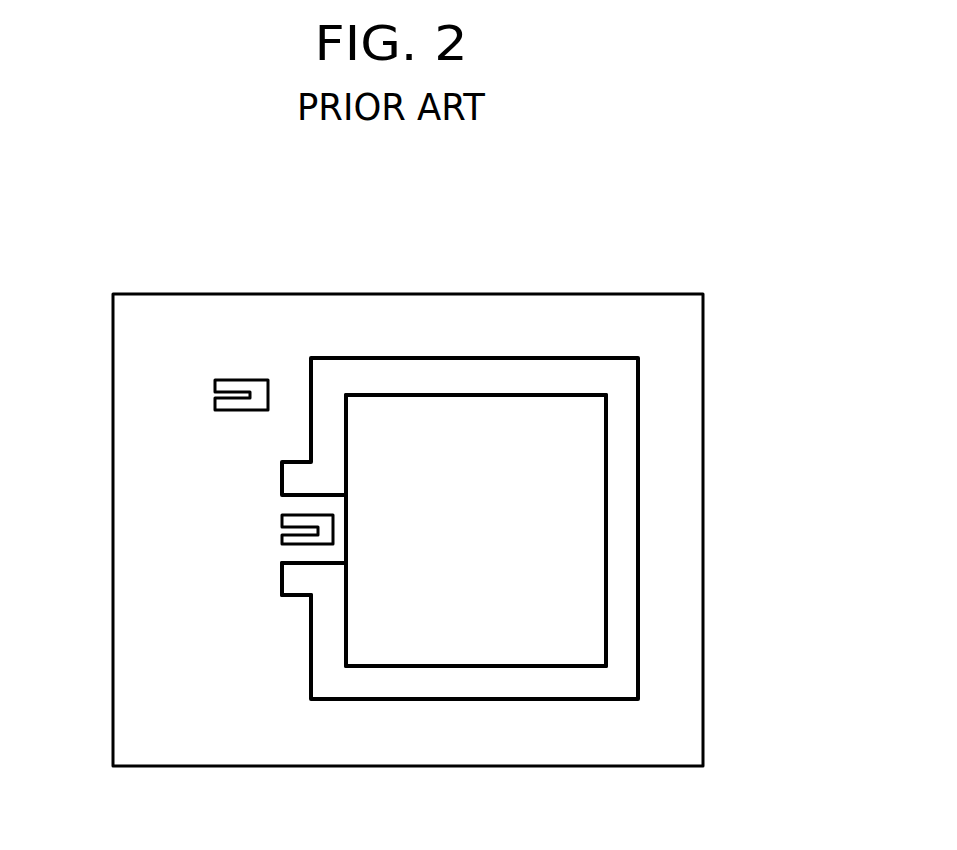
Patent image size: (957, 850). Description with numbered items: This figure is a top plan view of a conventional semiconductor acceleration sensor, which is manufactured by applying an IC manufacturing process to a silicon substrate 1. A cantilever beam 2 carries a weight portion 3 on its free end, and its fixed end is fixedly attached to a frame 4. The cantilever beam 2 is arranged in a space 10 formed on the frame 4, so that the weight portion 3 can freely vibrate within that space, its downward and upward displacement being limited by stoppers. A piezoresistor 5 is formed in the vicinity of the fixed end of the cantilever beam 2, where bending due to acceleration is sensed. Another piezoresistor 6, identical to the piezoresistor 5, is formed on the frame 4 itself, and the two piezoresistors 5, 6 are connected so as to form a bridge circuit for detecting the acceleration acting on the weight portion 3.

The silicon substrate 1 is at (701, 238).
The cantilever beam 2 is at (298, 552).
The weight portion 3 is at (514, 412).
The frame 4 is at (685, 515).
The piezoresistor 5 is at (280, 518).
The piezoresistor 6 is at (213, 396).
The space 10 is at (625, 447).